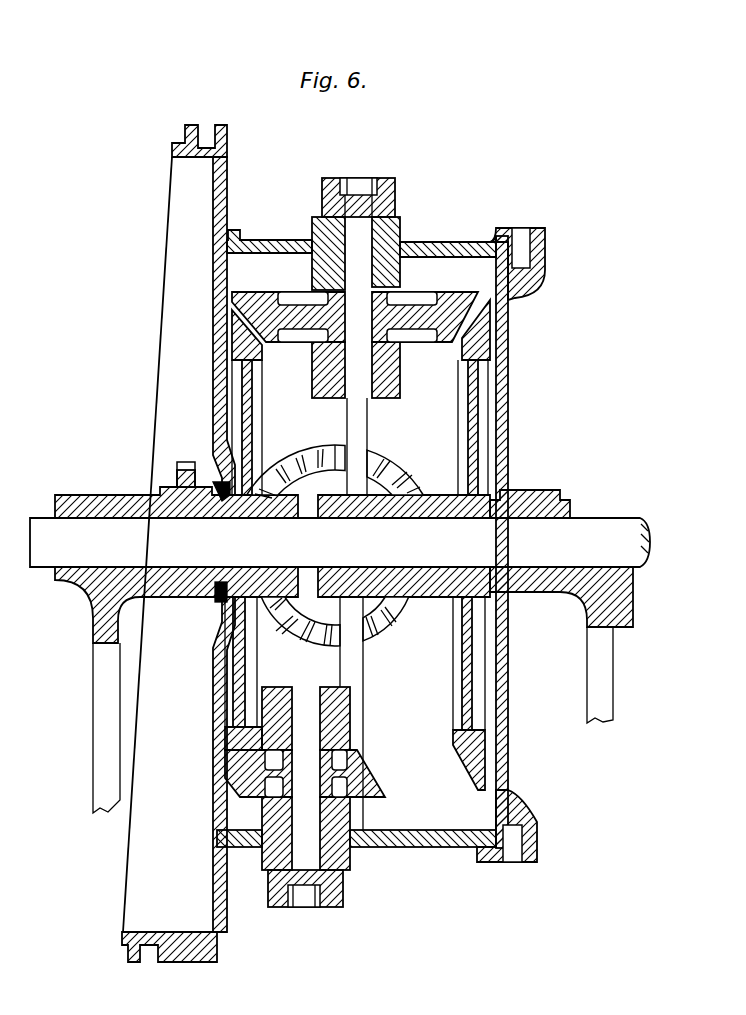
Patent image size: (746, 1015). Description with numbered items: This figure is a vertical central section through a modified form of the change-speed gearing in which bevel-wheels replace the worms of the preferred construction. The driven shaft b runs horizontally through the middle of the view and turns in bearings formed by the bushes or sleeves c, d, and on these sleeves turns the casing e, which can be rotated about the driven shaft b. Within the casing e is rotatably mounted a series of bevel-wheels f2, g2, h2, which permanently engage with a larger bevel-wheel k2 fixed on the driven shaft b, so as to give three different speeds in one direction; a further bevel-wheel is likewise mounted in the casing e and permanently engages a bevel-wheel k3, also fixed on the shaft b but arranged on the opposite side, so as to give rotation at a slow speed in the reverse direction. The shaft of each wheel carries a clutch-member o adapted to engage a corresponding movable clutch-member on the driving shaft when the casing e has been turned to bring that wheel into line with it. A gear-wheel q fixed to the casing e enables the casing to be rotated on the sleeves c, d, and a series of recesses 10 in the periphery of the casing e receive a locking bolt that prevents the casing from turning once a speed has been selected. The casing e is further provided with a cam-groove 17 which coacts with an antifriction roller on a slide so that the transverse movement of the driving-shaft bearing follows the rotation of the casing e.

The driven shaft b is at (340, 542).
The sleeve c is at (116, 495).
The sleeve d is at (565, 608).
The casing e is at (508, 372).
The gear-wheel q is at (186, 462).
The bevel-wheel g2 is at (392, 478).
The bevel-wheel h2 is at (445, 295).
The bevel-wheel f2 is at (362, 768).
The larger bevel-wheel k2 is at (260, 530).
The bevel-wheel k3 is at (458, 358).
The clutch-member o is at (395, 198).
The recess 10 is at (521, 240).
The cam-groove 17 is at (212, 128).